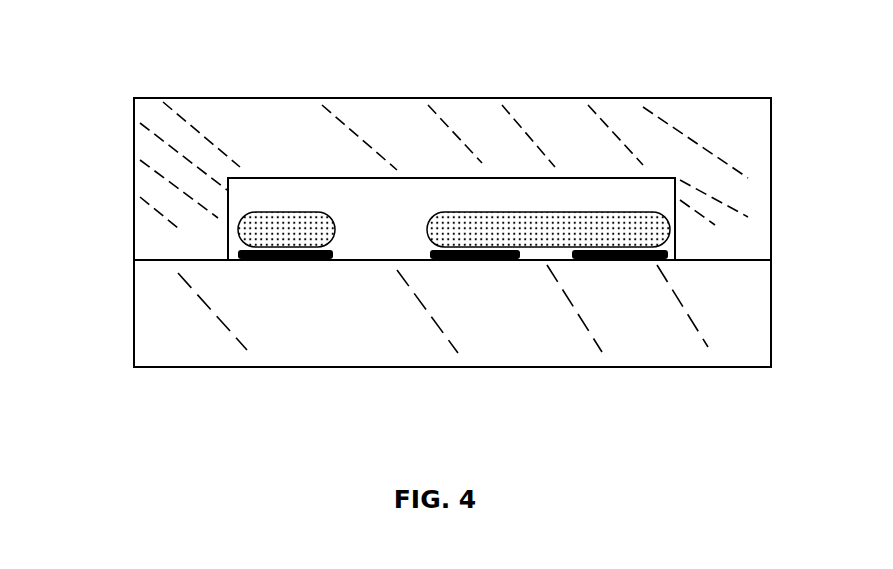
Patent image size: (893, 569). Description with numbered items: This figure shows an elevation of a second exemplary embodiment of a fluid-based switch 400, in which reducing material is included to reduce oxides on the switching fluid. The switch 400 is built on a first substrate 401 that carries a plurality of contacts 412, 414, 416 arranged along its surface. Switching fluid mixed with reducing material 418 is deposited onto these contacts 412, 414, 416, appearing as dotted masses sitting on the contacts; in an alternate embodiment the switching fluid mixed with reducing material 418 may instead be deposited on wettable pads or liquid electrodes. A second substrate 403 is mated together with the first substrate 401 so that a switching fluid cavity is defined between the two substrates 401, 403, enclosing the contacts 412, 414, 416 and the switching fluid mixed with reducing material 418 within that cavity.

The switch 400 is at (100, 245).
The first substrate 401 is at (704, 133).
The substrate 403 is at (709, 288).
The contact 412 is at (302, 260).
The contact 414 is at (477, 261).
The contact 416 is at (620, 262).
The switching fluid mixed with reducing material 418 is at (495, 223).